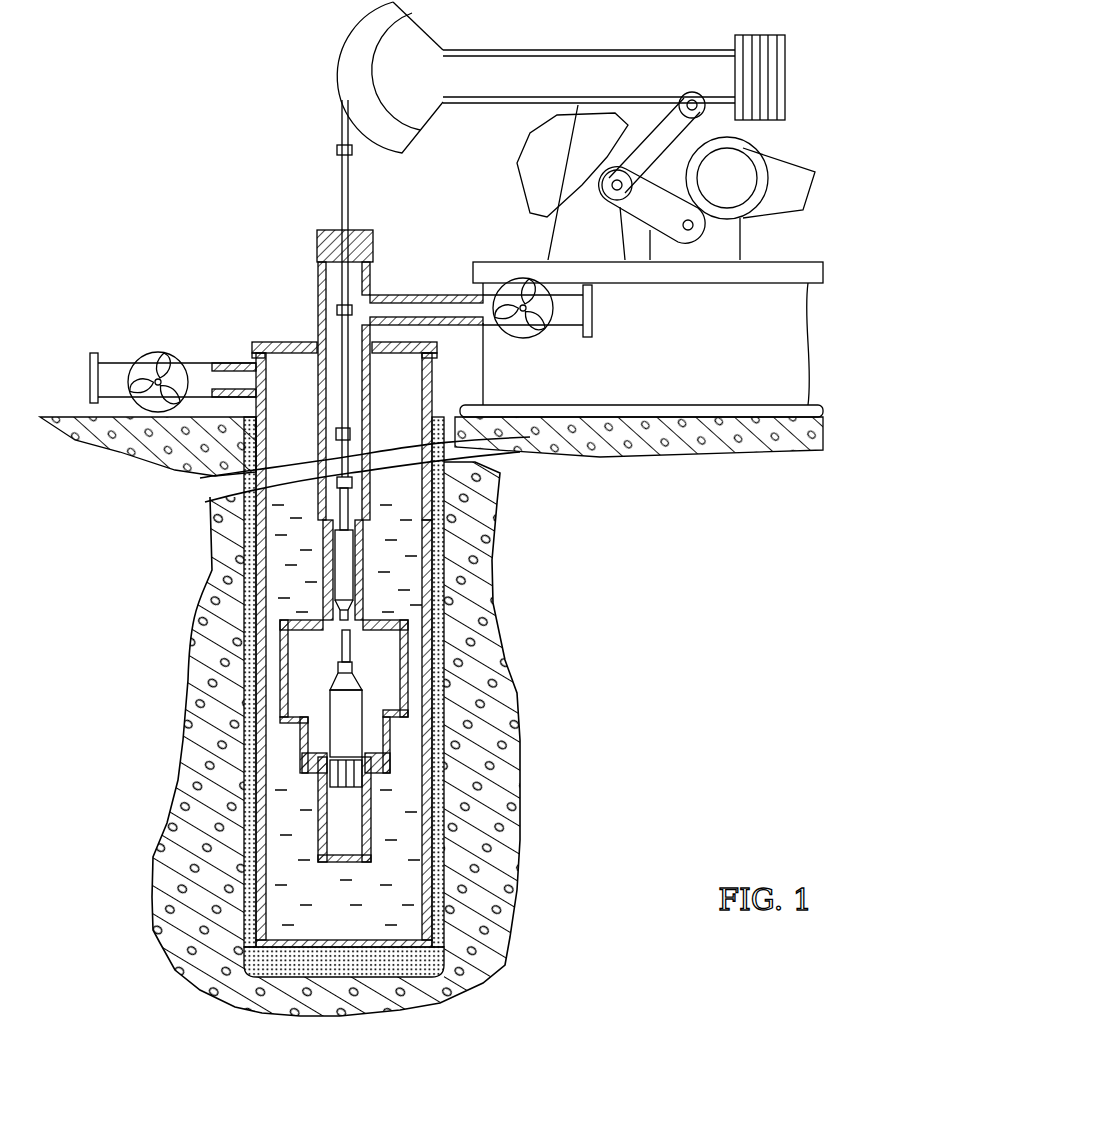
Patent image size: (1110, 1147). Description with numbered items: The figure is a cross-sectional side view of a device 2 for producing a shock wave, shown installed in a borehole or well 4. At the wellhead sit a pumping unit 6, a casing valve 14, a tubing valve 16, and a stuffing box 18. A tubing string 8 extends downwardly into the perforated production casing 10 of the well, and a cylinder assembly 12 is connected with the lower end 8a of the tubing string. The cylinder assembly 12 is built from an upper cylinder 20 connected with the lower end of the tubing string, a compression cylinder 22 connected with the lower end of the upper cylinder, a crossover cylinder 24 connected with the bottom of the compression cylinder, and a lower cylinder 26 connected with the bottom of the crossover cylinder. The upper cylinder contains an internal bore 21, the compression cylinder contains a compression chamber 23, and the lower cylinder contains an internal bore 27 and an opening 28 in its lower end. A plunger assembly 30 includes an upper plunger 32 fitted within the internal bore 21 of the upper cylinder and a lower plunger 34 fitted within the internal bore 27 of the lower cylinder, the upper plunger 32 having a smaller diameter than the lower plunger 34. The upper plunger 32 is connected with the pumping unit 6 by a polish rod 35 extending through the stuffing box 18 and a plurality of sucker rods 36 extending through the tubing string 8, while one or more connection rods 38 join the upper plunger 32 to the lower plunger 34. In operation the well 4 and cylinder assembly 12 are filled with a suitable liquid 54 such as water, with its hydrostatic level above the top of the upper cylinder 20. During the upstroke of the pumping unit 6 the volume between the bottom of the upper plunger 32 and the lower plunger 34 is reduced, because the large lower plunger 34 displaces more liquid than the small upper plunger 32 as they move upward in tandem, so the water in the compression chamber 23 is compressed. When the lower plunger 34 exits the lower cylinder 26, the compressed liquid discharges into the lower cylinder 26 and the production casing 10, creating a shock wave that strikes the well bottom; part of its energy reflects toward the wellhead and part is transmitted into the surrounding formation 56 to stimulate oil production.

The device 2 is at (272, 293).
The well 4 is at (437, 598).
The pumping unit 6 is at (507, 70).
The tubing string 8 is at (298, 342).
The lower end of the tubing string 8a is at (443, 500).
The perforated production casing 10 is at (200, 903).
The cylinder assembly 12 is at (372, 566).
The casing valve 14 is at (156, 352).
The tubing valve 16 is at (538, 330).
The stuffing box 18 is at (373, 230).
The upper cylinder 20 is at (326, 543).
The internal bore 21 is at (330, 498).
The compression cylinder 22 is at (283, 680).
The compression chamber 23 is at (327, 647).
The crossover cylinder 24 is at (305, 735).
The lower cylinder 26 is at (318, 800).
The internal bore 27 is at (330, 825).
The opening 28 is at (340, 862).
The plunger assembly 30 is at (366, 680).
The upper plunger 32 is at (323, 573).
The lower plunger 34 is at (350, 738).
The polish rod 35 is at (342, 190).
The sucker rods 36 is at (373, 381).
The connection rods 38 is at (410, 628).
The liquid 54 is at (440, 892).
The formation 56 is at (483, 810).